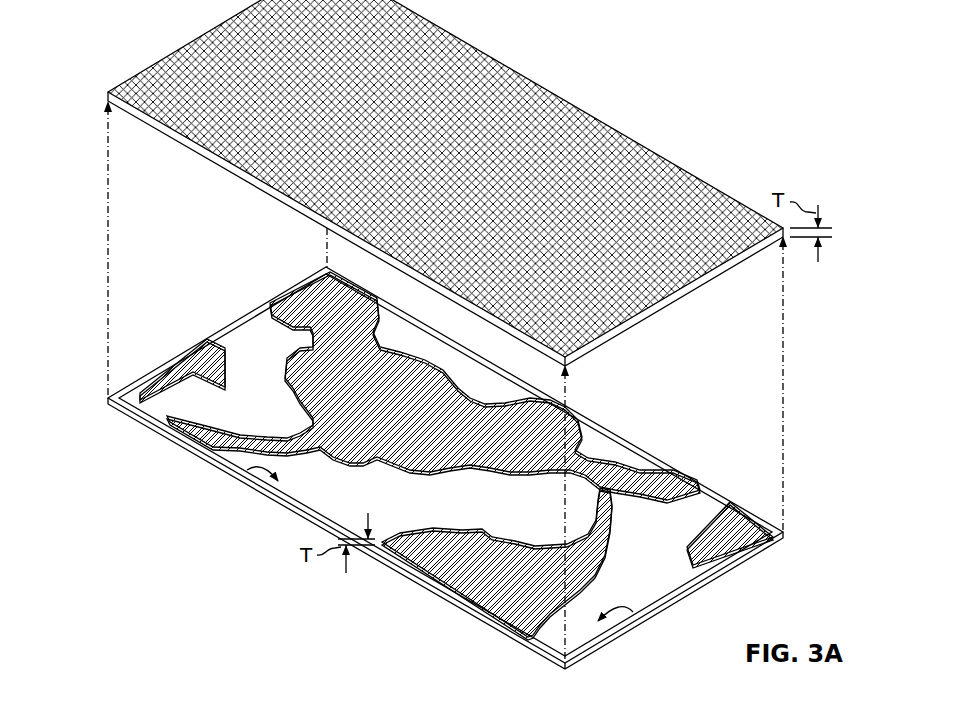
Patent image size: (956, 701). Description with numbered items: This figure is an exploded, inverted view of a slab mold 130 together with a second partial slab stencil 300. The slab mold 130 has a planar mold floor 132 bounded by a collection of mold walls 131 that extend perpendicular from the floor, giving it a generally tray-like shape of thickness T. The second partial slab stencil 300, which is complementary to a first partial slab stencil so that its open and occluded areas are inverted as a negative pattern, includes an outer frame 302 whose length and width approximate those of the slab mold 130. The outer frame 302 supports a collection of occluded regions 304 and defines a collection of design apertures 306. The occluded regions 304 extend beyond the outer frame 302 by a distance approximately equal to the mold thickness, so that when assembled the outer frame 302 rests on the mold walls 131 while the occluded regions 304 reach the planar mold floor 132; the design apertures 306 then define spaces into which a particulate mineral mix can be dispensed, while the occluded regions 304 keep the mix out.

The slab mold 130 is at (423, 183).
The mold walls 131 is at (177, 137).
The planar mold floor 132 is at (152, 90).
The second partial slab stencil 300 is at (88, 322).
The outer frame 302 is at (450, 598).
The occluded regions 304 is at (200, 345).
The design apertures 306 is at (177, 402).